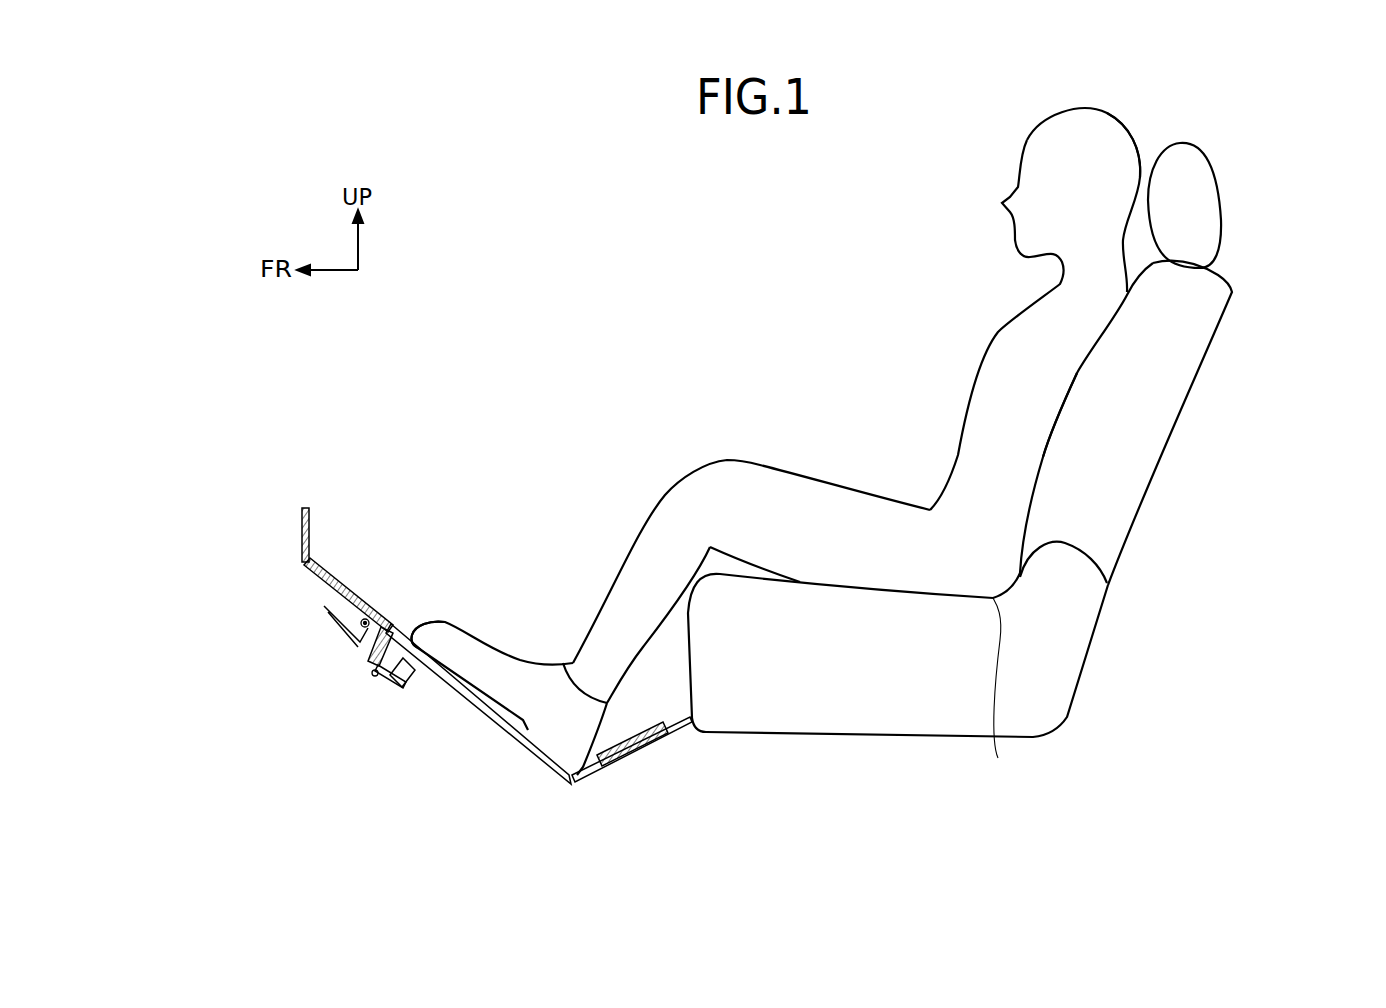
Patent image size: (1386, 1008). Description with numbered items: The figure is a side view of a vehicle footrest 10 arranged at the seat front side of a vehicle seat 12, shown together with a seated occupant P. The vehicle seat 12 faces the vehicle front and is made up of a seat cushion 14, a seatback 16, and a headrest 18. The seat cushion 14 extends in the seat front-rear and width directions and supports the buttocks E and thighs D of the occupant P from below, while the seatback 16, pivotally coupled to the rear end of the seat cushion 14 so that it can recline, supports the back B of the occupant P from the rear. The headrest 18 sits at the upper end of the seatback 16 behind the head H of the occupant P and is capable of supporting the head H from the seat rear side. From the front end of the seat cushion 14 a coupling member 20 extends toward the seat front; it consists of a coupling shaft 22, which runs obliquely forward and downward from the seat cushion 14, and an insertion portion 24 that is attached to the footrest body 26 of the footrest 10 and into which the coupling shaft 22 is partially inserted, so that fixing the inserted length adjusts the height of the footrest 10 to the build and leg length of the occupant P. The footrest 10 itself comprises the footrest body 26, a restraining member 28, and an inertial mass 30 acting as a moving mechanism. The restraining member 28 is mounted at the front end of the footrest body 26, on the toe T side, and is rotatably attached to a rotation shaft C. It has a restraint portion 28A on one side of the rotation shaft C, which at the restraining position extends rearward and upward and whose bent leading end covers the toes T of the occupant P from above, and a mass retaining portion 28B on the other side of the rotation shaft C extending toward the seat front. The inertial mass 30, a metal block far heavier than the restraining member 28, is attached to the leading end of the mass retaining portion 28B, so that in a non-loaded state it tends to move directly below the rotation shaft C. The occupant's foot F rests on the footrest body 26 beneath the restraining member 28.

The vehicle footrest 10 is at (488, 640).
The vehicle seat 12 is at (1004, 474).
The seat cushion 14 is at (848, 738).
The seatback 16 is at (1197, 353).
The headrest 18 is at (1220, 212).
The coupling member 20 is at (488, 671).
The coupling shaft 22 is at (680, 737).
The insertion portion 24 is at (630, 760).
The footrest body 26 is at (523, 755).
The restraining member 28 is at (294, 629).
The restraint portion 28A is at (298, 540).
The mass retaining portion 28B is at (390, 685).
The inertial mass 30 is at (412, 677).
The occupant P is at (1019, 135).
The head H is at (1133, 132).
The back B is at (1077, 375).
The thighs D is at (807, 478).
The foot of occupant F is at (487, 647).
The toes T is at (428, 632).
The buttocks E is at (1003, 693).
The rotation shaft C is at (357, 640).